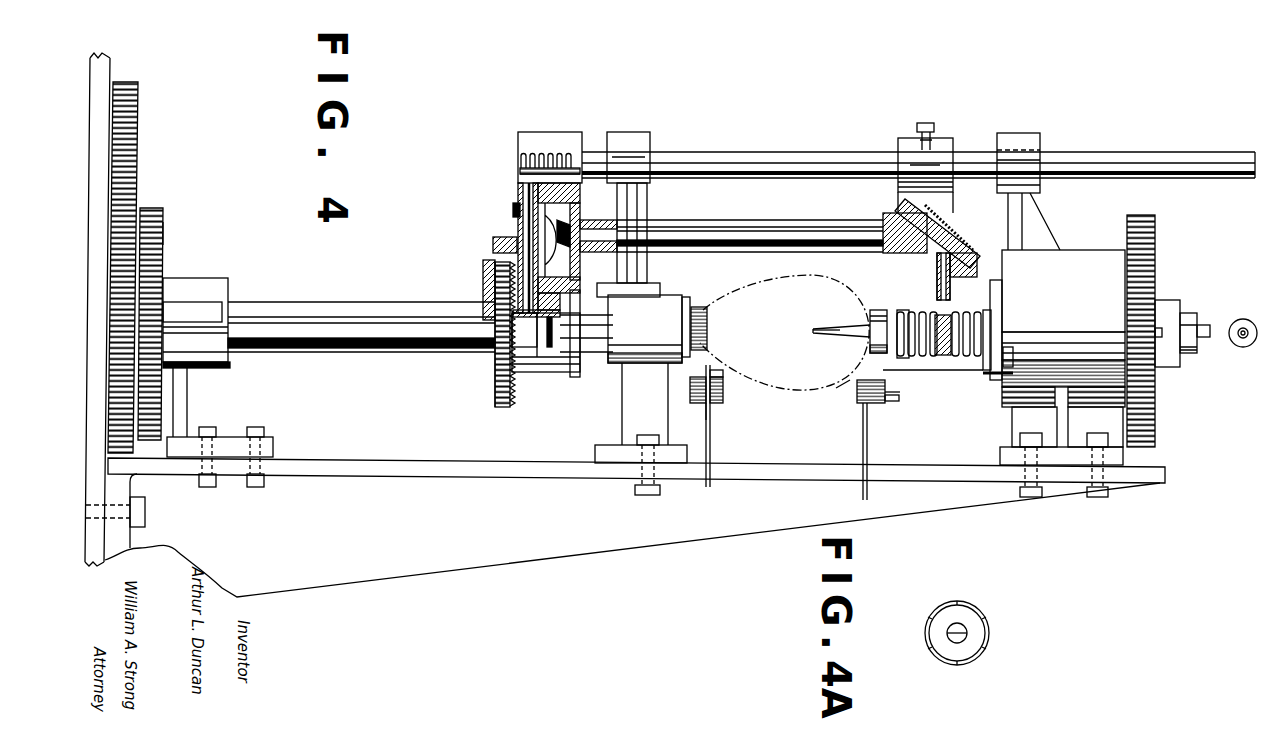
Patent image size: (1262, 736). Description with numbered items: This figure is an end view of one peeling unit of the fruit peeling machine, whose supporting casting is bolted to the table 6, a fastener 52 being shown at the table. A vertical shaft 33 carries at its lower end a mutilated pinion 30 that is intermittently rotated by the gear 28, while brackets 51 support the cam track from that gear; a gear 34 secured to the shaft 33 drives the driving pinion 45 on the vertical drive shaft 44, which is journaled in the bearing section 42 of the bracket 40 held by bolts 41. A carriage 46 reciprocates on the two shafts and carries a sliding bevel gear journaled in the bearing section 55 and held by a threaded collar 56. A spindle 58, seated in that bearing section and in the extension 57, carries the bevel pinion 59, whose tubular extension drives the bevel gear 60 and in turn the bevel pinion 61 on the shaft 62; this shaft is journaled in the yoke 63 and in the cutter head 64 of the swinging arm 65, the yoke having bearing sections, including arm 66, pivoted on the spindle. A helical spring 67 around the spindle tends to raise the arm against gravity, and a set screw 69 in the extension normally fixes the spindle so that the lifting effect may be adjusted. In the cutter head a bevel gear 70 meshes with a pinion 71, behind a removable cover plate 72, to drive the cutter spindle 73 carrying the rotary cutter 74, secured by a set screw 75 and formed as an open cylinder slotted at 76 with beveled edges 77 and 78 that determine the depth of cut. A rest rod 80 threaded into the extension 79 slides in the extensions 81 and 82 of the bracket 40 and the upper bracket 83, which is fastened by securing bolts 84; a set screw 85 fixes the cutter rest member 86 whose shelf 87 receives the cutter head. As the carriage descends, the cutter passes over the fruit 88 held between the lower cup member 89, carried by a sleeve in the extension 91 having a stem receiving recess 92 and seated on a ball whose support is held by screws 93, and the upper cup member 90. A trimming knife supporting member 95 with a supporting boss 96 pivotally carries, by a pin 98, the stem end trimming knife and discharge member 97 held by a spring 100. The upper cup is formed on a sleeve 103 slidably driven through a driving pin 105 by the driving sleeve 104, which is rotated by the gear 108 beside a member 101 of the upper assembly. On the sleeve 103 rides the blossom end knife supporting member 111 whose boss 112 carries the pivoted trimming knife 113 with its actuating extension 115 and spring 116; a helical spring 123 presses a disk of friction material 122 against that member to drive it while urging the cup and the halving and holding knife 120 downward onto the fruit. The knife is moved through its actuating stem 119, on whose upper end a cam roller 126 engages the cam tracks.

In FIG. 4, the table 6 is at (107, 70).
In FIG. 4, the gear 28 is at (138, 95).
In FIG. 4, the mutilated pinion 30 is at (150, 222).
In FIG. 4, the shaft 33 is at (352, 302).
In FIG. 4, the gear 34 is at (165, 232).
In FIG. 4, the bracket 40 is at (708, 405).
In FIG. 4, the bolts 41 is at (660, 490).
In FIG. 4, the bearing section 42 is at (580, 377).
In FIG. 4, the vertical drive shaft 44 is at (338, 354).
In FIG. 4, the driving pinion 45 is at (225, 285).
In FIG. 4, the carriage 46 is at (205, 302).
In FIG. 4, the brackets 51 is at (437, 543).
In FIG. 4, the bolt 52 is at (146, 512).
In FIG. 4, the bearing section 55 is at (232, 368).
In FIG. 4, the threaded collar 56 is at (636, 450).
In FIG. 4, the extension 57 is at (256, 488).
In FIG. 4, the spindle 58 is at (522, 300).
In FIG. 4, the bevel pinion 59 is at (483, 282).
In FIG. 4, the bevel gear 60 is at (493, 248).
In FIG. 4, the bevel pinion 61 is at (540, 200).
In FIG. 4, the shaft 62 is at (665, 235).
In FIG. 4, the yoke 63 is at (615, 250).
In FIG. 4, the cutter head 64 is at (872, 318).
In FIG. 4, the swinging arm 65 is at (728, 232).
In FIG. 4, the bearing section 66 is at (518, 210).
In FIG. 4, the helical spring 67 is at (516, 203).
In FIG. 4, the set screw 69 is at (533, 240).
In FIG. 4, the bevel gear 70 is at (897, 200).
In FIG. 4, the pinion 71 is at (968, 277).
In FIG. 4, the cover plate 72 is at (940, 222).
In FIG. 4, the cutter spindle 73 is at (937, 280).
In FIG. 4, the rotary cutter 74 is at (960, 358).
In FIG. 4A, the rotary cutter 74 is at (958, 622).
In FIG. 4, the set screw 75 is at (910, 192).
In FIG. 4A, the set screw 75 is at (950, 620).
In FIG. 4, the slot 76 is at (915, 358).
In FIG. 4A, the slot 76 is at (930, 652).
In FIG. 4A, the beveled cutting edge 77 is at (928, 645).
In FIG. 4A, the beveled adjacent edge 78 is at (957, 662).
In FIG. 4, the extension 79 is at (540, 145).
In FIG. 4, the rest rod 80 is at (745, 152).
In FIG. 4, the extension 81 is at (628, 135).
In FIG. 4, the extension 82 is at (1020, 140).
In FIG. 4, the bracket 83 is at (1108, 495).
In FIG. 4, the securing bolts 84 is at (1038, 497).
In FIG. 4, the set screw 85 is at (925, 122).
In FIG. 4, the cutter rest member 86 is at (903, 145).
In FIG. 4, the shelf 87 is at (1006, 228).
In FIG. 4, the fruit 88 is at (806, 388).
In FIG. 4, the lower cup member 89 is at (723, 383).
In FIG. 4, the upper cup member 90 is at (633, 363).
In FIG. 4, the extension 91 is at (565, 372).
In FIG. 4, the stem receiving recess 92 is at (505, 407).
In FIG. 4, the screws 93 is at (535, 372).
In FIG. 4, the trimming knife supporting member 95 is at (645, 330).
In FIG. 4, the supporting boss 96 is at (706, 392).
In FIG. 4, the stem end trimming knife and discharge member 97 is at (710, 487).
In FIG. 4, the pin 98 is at (723, 390).
In FIG. 4, the spring 100 is at (707, 322).
In FIG. 4, the motor 101 is at (1100, 270).
In FIG. 4, the sleeve 103 is at (1003, 385).
In FIG. 4, the driving sleeve 104 is at (1160, 367).
In FIG. 4, the driving pin 105 is at (1182, 353).
In FIG. 4, the gear 108 is at (1147, 248).
In FIG. 4, the blossom end knife supporting member 111 is at (893, 400).
In FIG. 4, the boss 112 is at (872, 403).
In FIG. 4, the trimming knife 113 is at (858, 397).
In FIG. 4, the actuating extension 115 is at (863, 490).
In FIG. 4, the spring 116 is at (836, 388).
In FIG. 4, the actuating stem 119 is at (1202, 325).
In FIG. 4, the halving and holding knife 120 is at (821, 332).
In FIG. 4, the disk of friction material 122 is at (883, 250).
In FIG. 4, the helical spring 123 is at (987, 358).
In FIG. 4, the cam roller 126 is at (1243, 347).